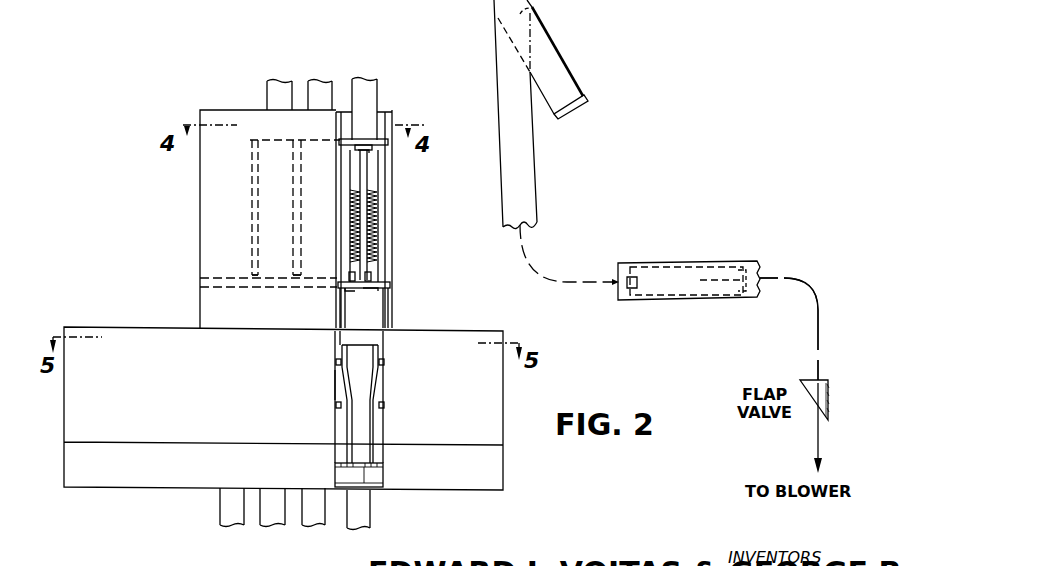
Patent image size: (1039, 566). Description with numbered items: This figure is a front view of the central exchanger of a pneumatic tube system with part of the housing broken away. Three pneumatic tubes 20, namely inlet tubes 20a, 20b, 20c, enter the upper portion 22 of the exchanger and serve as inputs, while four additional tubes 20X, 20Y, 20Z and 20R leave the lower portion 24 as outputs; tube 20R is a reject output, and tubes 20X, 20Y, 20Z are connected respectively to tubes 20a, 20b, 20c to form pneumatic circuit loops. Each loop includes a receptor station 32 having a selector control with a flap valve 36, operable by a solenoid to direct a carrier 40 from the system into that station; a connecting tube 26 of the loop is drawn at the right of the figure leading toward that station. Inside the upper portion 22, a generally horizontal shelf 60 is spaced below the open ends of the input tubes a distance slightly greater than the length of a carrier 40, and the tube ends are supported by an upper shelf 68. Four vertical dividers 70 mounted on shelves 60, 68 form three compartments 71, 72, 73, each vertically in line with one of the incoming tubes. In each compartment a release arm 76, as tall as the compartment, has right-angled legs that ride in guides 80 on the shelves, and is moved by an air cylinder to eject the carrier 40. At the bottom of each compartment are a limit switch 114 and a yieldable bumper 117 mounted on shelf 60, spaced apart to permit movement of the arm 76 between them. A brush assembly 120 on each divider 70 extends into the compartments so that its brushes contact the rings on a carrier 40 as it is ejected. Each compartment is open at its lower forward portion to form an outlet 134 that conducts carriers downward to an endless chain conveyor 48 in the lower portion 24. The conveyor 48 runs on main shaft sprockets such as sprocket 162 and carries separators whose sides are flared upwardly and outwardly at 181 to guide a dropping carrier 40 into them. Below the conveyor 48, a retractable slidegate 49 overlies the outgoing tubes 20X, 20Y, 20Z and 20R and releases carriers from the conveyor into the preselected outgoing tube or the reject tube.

The pneumatic tubes 20 is at (683, 262).
The inlet pneumatic tube 20a is at (283, 80).
The inlet pneumatic tube 20b is at (320, 80).
The inlet pneumatic tube 20c is at (364, 79).
The reject output tube 20R is at (230, 527).
The output pneumatic tube 20X is at (273, 527).
The output pneumatic tube 20Y is at (312, 527).
The output pneumatic tube 20Z is at (358, 530).
The upper portion 22 is at (196, 222).
The lower portion 24 is at (508, 389).
The chute 26 is at (489, 13).
The receptor station 32 is at (566, 80).
The flap valve 36 is at (533, 12).
The carrier 40 is at (710, 288).
The endless chain conveyor 48 is at (382, 403).
The retractable slidegate 49 is at (362, 488).
The horizontal shelf 60 is at (390, 285).
The upper shelf 68 is at (343, 139).
The vertical dividers 70 is at (385, 162).
The compartment 71 is at (372, 180).
The compartment 72 is at (316, 283).
The compartment 73 is at (260, 279).
The release arm 76 is at (365, 270).
The guides 80 is at (357, 150).
The limit switch 114 is at (353, 283).
The yieldable bumper 117 is at (371, 290).
The brush assembly 120 is at (373, 237).
The outlet 134 is at (372, 323).
The main shaft sprocket 162 is at (336, 400).
The flared upper portion 181 is at (380, 361).